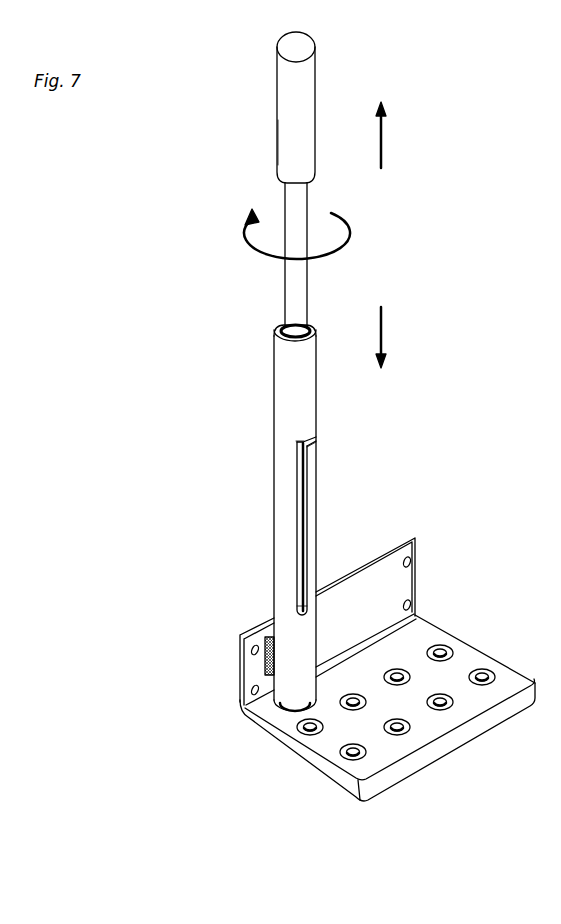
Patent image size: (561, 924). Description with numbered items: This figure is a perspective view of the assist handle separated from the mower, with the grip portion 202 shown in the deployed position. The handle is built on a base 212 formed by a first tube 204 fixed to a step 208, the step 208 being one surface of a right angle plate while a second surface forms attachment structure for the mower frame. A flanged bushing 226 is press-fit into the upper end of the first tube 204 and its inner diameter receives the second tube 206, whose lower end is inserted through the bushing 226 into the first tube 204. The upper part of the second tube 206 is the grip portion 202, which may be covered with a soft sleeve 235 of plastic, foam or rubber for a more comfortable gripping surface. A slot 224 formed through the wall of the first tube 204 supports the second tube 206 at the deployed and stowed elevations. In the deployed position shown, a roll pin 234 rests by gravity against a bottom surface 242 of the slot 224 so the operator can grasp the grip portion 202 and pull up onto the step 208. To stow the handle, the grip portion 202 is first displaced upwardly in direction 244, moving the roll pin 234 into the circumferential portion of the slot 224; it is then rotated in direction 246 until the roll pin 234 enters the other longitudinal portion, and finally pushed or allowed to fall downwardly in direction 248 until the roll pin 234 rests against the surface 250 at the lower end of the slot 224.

The grip portion 202 is at (315, 84).
The soft sleeve 235 is at (277, 118).
The second tube 206 is at (285, 202).
The rotation direction 246 is at (340, 252).
The upward direction 244 is at (381, 147).
The downward direction 248 is at (381, 330).
The flanged bushing 226 is at (280, 326).
The first tube 204 is at (274, 382).
The slot 224 is at (298, 492).
The roll pin 234 is at (272, 440).
The bottom surface 242 is at (316, 446).
The surface 250 is at (300, 612).
The base 212 is at (422, 562).
The step 208 is at (468, 660).